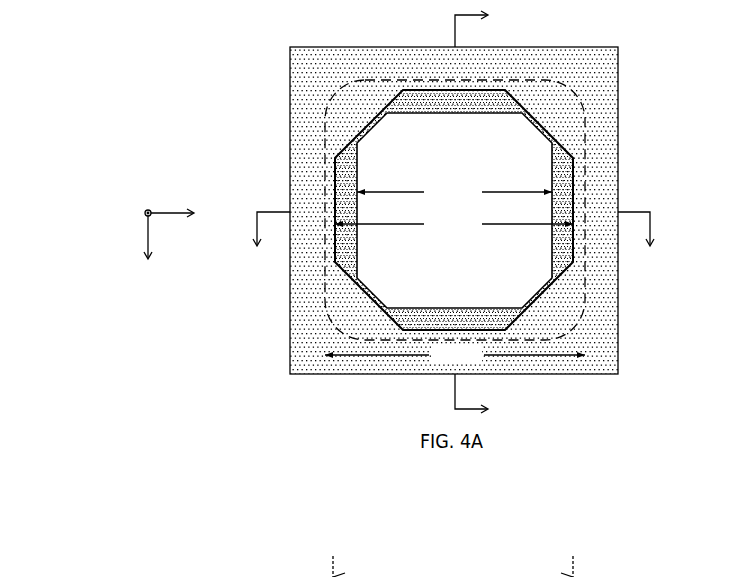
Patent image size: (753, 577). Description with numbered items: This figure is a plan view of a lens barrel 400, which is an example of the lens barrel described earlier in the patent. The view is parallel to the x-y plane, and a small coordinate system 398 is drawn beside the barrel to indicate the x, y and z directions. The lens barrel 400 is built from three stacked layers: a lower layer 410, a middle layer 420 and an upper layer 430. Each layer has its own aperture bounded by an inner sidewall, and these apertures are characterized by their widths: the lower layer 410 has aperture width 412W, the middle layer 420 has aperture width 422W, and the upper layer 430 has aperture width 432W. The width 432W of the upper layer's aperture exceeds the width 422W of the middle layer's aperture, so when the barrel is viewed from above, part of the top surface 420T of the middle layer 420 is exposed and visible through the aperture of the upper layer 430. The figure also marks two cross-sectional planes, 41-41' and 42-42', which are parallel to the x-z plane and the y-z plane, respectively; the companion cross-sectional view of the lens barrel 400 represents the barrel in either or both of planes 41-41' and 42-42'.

The lens barrel 400 is at (372, 291).
The coordinate system 398 is at (126, 221).
The lower layer 410 is at (349, 81).
The upper layer 430 is at (502, 70).
The middle layer 420 is at (551, 167).
The top surface 420T is at (473, 110).
The width of aperture of middle layer 422W is at (454, 191).
The width of aperture of upper layer 432W is at (453, 394).
The width of aperture of lower layer 412W is at (455, 356).
The cross-sectional plane 41-41' 41 is at (268, 242).
The cross-sectional plane 41- 41' is at (640, 242).
The cross-sectional plane 42-42' 42 is at (485, 398).
The cross-sectional plane 42- 42' is at (485, 26).